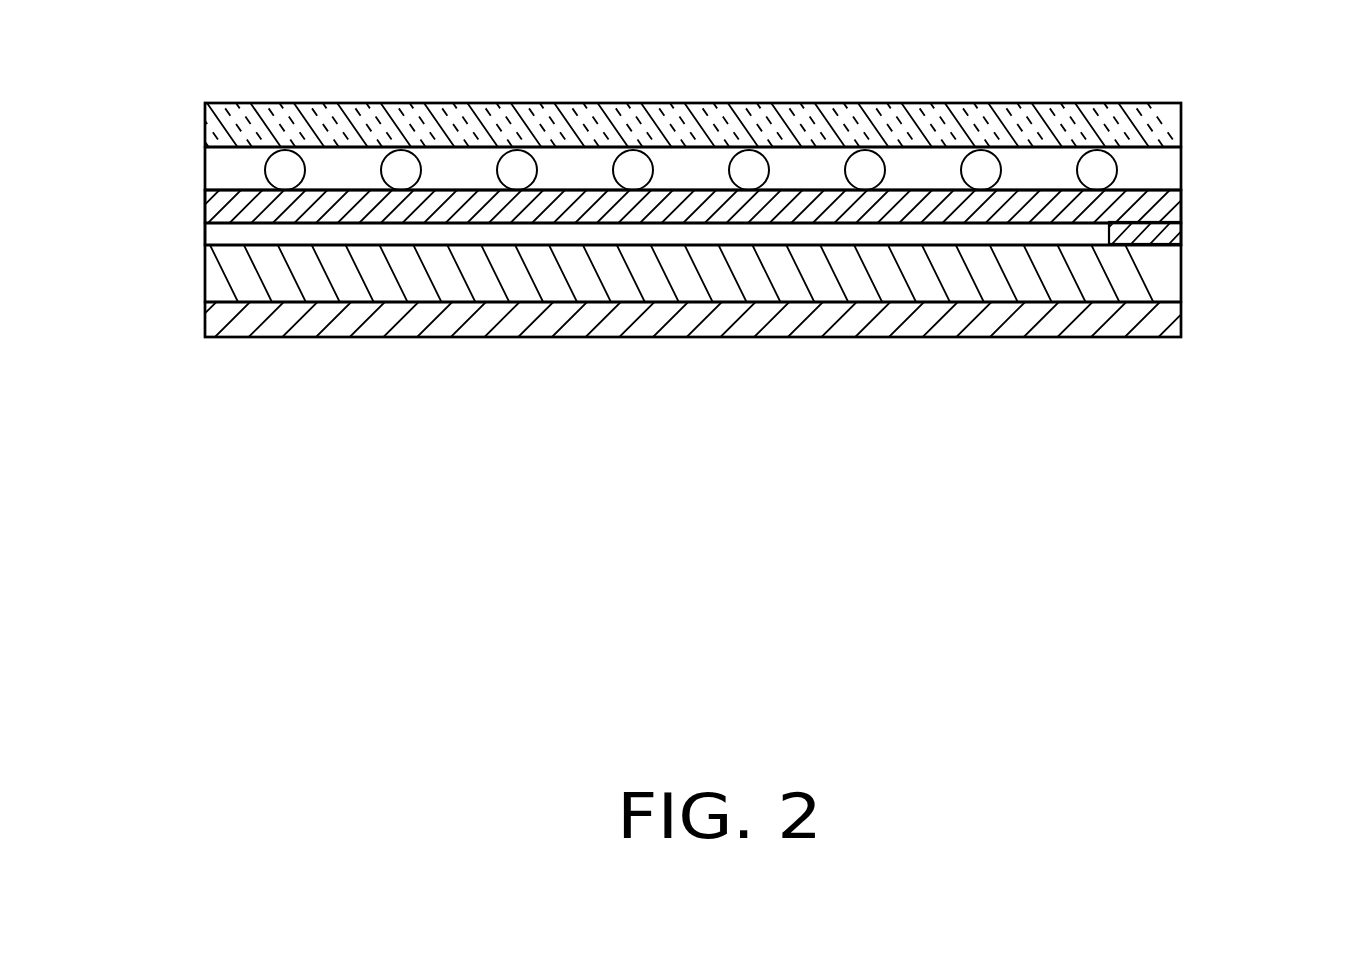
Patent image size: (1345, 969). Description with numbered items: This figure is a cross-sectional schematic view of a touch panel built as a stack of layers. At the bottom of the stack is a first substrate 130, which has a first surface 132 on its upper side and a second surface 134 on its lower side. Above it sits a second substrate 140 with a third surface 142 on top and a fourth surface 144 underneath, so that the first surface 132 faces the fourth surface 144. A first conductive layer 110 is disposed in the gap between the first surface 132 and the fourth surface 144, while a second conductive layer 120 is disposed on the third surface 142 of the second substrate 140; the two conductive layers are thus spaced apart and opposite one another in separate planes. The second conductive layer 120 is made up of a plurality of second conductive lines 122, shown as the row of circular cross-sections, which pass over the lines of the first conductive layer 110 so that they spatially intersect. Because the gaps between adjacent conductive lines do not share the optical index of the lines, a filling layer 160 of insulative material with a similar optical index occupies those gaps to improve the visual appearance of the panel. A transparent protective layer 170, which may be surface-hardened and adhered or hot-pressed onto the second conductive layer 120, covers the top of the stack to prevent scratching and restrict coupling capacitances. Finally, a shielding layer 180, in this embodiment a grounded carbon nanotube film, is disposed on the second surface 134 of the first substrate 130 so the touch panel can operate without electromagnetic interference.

The first conductive layer 110 is at (1192, 222).
The second conductive layer 120 is at (199, 150).
The second conductive lines 122 is at (1100, 170).
The first substrate 130 is at (1163, 275).
The first surface 132 is at (232, 246).
The second surface 134 is at (223, 303).
The second substrate 140 is at (1163, 207).
The third surface 142 is at (1137, 200).
The fourth surface 144 is at (1056, 223).
The filling layer 160 is at (1028, 168).
The protective layer 170 is at (1073, 123).
The shielding layer 180 is at (958, 315).